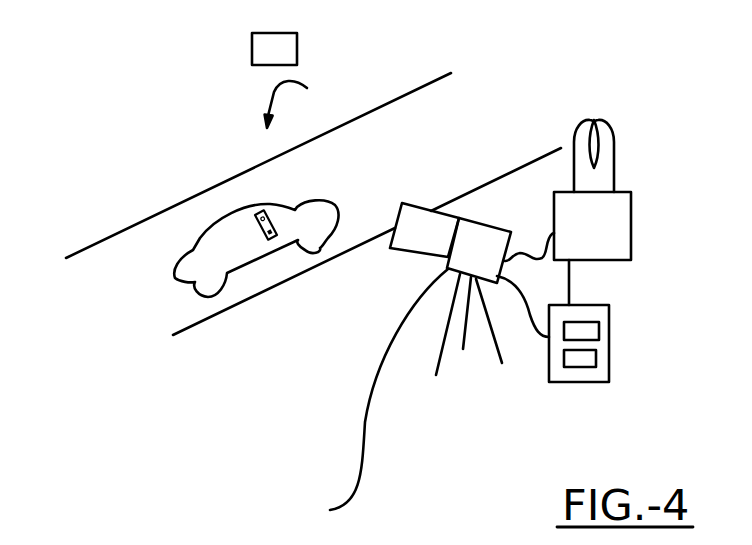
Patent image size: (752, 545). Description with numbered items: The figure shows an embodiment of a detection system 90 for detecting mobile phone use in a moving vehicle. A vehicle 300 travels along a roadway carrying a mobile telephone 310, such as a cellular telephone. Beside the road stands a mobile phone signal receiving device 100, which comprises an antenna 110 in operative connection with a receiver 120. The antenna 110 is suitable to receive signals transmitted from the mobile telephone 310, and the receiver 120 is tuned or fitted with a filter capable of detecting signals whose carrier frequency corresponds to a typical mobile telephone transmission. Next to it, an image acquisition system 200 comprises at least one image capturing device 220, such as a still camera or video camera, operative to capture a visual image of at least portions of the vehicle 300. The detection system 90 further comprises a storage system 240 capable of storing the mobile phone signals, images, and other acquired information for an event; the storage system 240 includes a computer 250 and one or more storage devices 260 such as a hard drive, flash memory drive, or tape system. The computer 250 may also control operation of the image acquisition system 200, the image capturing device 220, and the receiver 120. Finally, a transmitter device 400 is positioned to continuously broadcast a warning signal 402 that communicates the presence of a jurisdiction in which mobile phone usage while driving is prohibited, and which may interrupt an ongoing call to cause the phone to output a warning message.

The detection system 90 is at (565, 73).
The mobile phone signal receiving device 100 is at (643, 243).
The antenna 110 is at (614, 147).
The receiver 120 is at (617, 260).
The image acquisition system 200 is at (377, 308).
The image capturing device 220 is at (330, 510).
The storage system 240 is at (604, 375).
The computer 250 is at (599, 329).
The storage device 260 is at (596, 361).
The vehicle 300 is at (200, 238).
The mobile telephone 310 is at (260, 213).
The transmitter device 400 is at (293, 44).
The warning signal 402 is at (305, 100).